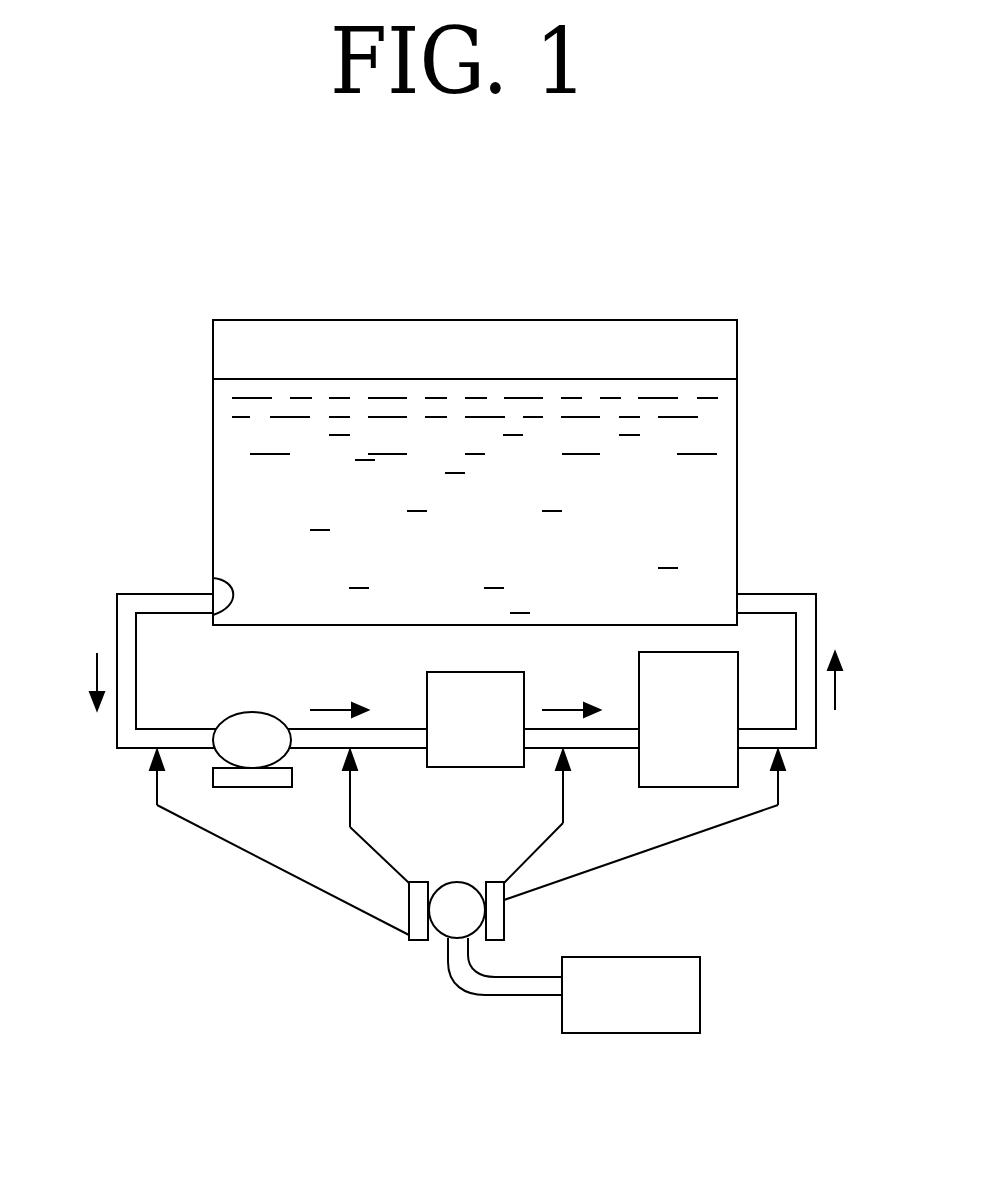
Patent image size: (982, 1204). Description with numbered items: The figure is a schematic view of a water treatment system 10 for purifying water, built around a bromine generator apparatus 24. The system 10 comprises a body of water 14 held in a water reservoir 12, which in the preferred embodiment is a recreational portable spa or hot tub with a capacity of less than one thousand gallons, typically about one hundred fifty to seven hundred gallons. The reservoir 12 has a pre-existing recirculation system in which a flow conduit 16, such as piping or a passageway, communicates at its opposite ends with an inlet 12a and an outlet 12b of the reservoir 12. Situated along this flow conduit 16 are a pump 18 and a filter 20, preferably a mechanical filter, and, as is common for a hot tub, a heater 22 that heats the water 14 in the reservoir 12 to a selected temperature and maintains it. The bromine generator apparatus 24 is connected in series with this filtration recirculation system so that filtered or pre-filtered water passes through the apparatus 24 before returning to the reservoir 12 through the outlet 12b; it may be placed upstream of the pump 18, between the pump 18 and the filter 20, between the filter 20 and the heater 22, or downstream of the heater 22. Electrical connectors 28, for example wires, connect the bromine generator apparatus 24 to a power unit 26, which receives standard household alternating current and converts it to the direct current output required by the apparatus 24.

The water treatment system 10 is at (762, 382).
The water reservoir 12 is at (213, 433).
The inlet 12a is at (213, 592).
The outlet 12b is at (737, 597).
The body of water 14 is at (270, 510).
The recirculation conduit 16 is at (117, 595).
The pump 18 is at (252, 730).
The filter 20 is at (433, 730).
The heater 22 is at (658, 710).
The bromine generator apparatus 24 is at (446, 918).
The power unit 26 is at (582, 977).
The electrical connectors 28 is at (446, 978).